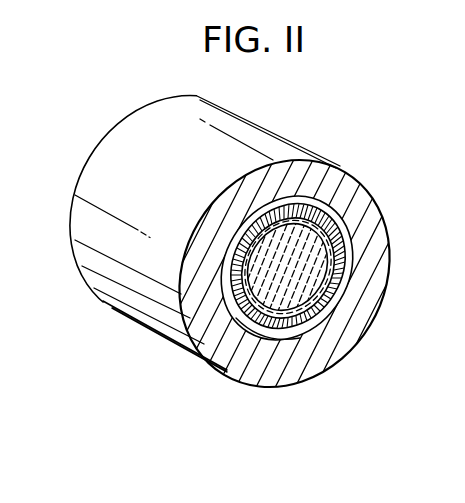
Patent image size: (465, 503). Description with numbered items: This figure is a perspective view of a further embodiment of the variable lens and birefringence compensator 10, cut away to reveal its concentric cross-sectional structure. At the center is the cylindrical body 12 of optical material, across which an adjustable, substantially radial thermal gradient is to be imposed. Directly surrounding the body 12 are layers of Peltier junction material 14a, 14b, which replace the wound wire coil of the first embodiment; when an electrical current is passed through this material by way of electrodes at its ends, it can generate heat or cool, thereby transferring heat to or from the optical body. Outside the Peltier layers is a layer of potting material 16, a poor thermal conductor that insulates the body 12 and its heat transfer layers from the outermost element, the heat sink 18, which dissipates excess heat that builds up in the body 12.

The variable lens and birefringence compensator 10 is at (100, 124).
The cylindrical body 12 is at (310, 280).
The Peltier junction material 14a is at (335, 235).
The Peltier junction material 14b is at (313, 305).
The potting material 16 is at (330, 220).
The heat sink 18 is at (333, 180).